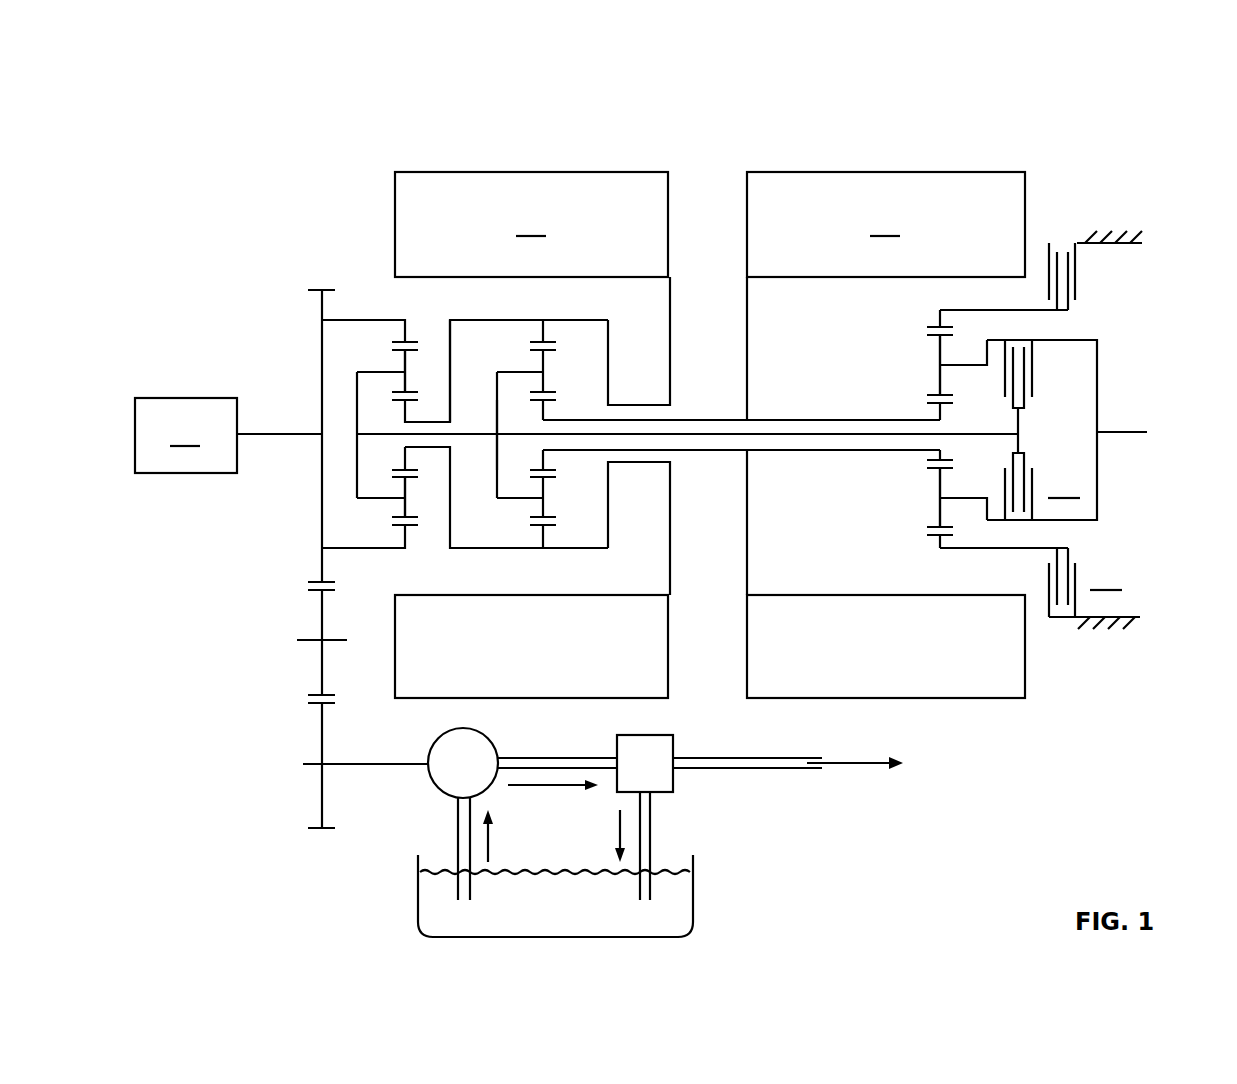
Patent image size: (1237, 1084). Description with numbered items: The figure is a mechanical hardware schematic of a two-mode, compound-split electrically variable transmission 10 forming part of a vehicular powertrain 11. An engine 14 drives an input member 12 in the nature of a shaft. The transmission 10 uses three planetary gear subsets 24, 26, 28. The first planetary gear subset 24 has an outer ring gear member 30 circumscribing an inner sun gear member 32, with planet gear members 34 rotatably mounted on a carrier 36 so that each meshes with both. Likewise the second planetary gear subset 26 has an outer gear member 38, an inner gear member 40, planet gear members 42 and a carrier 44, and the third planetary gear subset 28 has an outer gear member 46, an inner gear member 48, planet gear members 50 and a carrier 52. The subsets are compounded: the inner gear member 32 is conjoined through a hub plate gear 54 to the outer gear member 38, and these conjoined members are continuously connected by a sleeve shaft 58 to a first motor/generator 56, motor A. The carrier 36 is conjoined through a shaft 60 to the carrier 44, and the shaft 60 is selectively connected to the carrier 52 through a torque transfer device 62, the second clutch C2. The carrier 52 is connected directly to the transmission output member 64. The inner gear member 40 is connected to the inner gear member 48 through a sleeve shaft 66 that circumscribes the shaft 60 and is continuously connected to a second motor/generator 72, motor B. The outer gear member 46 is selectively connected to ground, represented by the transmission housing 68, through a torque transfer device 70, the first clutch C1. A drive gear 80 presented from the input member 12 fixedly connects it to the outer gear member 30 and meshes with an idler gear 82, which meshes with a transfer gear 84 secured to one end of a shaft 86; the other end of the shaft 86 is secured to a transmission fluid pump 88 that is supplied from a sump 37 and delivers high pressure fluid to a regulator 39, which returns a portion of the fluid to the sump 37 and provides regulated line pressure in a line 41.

The electrically variable transmission 10 is at (703, 158).
The powertrain 11 is at (255, 297).
The input member 12 is at (283, 432).
The engine 14 is at (186, 435).
The first planetary gear subset 24 is at (465, 394).
The second planetary gear subset 26 is at (553, 435).
The third planetary gear subset 28 is at (904, 427).
The outer gear member 30 is at (410, 343).
The inner gear member 32 is at (418, 405).
The planet gear members 34 is at (393, 362).
The carrier 36 is at (355, 475).
The outer gear member 38 is at (540, 343).
The inner gear member 40 is at (540, 468).
The planet gear members 42 is at (565, 345).
The carrier 44 is at (497, 480).
The outer gear member 46 is at (935, 325).
The inner gear member 48 is at (945, 460).
The planet gear members 50 is at (938, 392).
The carrier 52 is at (1075, 412).
The hub plate gear 54 is at (452, 358).
The first motor/generator 56 is at (531, 435).
The sleeve shaft 58 is at (640, 405).
The shaft 60 is at (705, 433).
The torque transfer device 62 is at (1033, 370).
The transmission output member 64 is at (1130, 432).
The sleeve shaft 66 is at (770, 418).
The transmission housing 68 is at (1125, 237).
The torque transfer device 70 is at (1080, 265).
The second motor/generator 72 is at (886, 435).
The drive gear 80 is at (318, 530).
The idler gear 82 is at (320, 665).
The transfer gear 84 is at (320, 733).
The shaft 86 is at (362, 768).
The transmission fluid pump 88 is at (478, 752).
The regulator 39 is at (673, 790).
The line 41 is at (815, 770).
The sump 37 is at (700, 900).
The first clutch C1 is at (1040, 588).
The second clutch C2 is at (1042, 486).